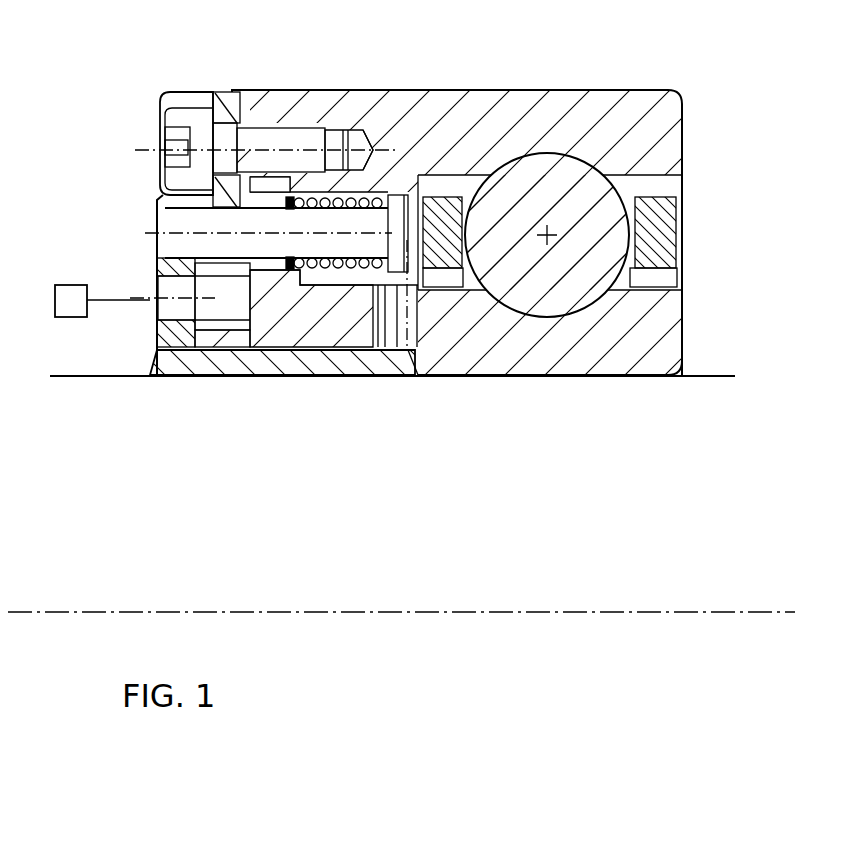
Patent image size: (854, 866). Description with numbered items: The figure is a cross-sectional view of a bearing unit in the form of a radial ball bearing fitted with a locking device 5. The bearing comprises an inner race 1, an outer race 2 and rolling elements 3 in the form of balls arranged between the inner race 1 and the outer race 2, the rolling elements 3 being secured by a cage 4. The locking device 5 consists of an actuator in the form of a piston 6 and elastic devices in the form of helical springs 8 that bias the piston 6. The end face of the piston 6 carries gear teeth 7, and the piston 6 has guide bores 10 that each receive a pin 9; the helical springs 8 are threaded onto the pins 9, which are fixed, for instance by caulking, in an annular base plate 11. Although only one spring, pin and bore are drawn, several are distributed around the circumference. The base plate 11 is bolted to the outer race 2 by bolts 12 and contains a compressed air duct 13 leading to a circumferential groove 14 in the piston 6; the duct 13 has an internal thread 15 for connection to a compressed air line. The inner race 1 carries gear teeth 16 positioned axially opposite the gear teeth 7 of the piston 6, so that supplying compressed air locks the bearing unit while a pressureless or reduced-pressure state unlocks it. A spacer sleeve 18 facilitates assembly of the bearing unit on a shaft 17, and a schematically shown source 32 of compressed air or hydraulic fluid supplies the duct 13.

The inner race 1 is at (645, 310).
The outer race 2 is at (665, 137).
The rolling elements 3 is at (592, 205).
The cage 4 is at (665, 223).
The locking device 5 is at (334, 284).
The piston 6 is at (355, 290).
The gear teeth 7 is at (390, 292).
The helical springs 8 is at (375, 136).
The pin 9 is at (372, 200).
The guide bores 10 is at (275, 190).
The annular base plate 11 is at (230, 95).
The bolts 12 is at (257, 140).
The compressed air duct 13 is at (181, 305).
The circumferential groove 14 is at (217, 307).
The internal thread 15 is at (157, 350).
The gear teeth 16 is at (413, 352).
The shaft 17 is at (663, 427).
The spacer sleeve 18 is at (272, 363).
The source 32 is at (66, 285).